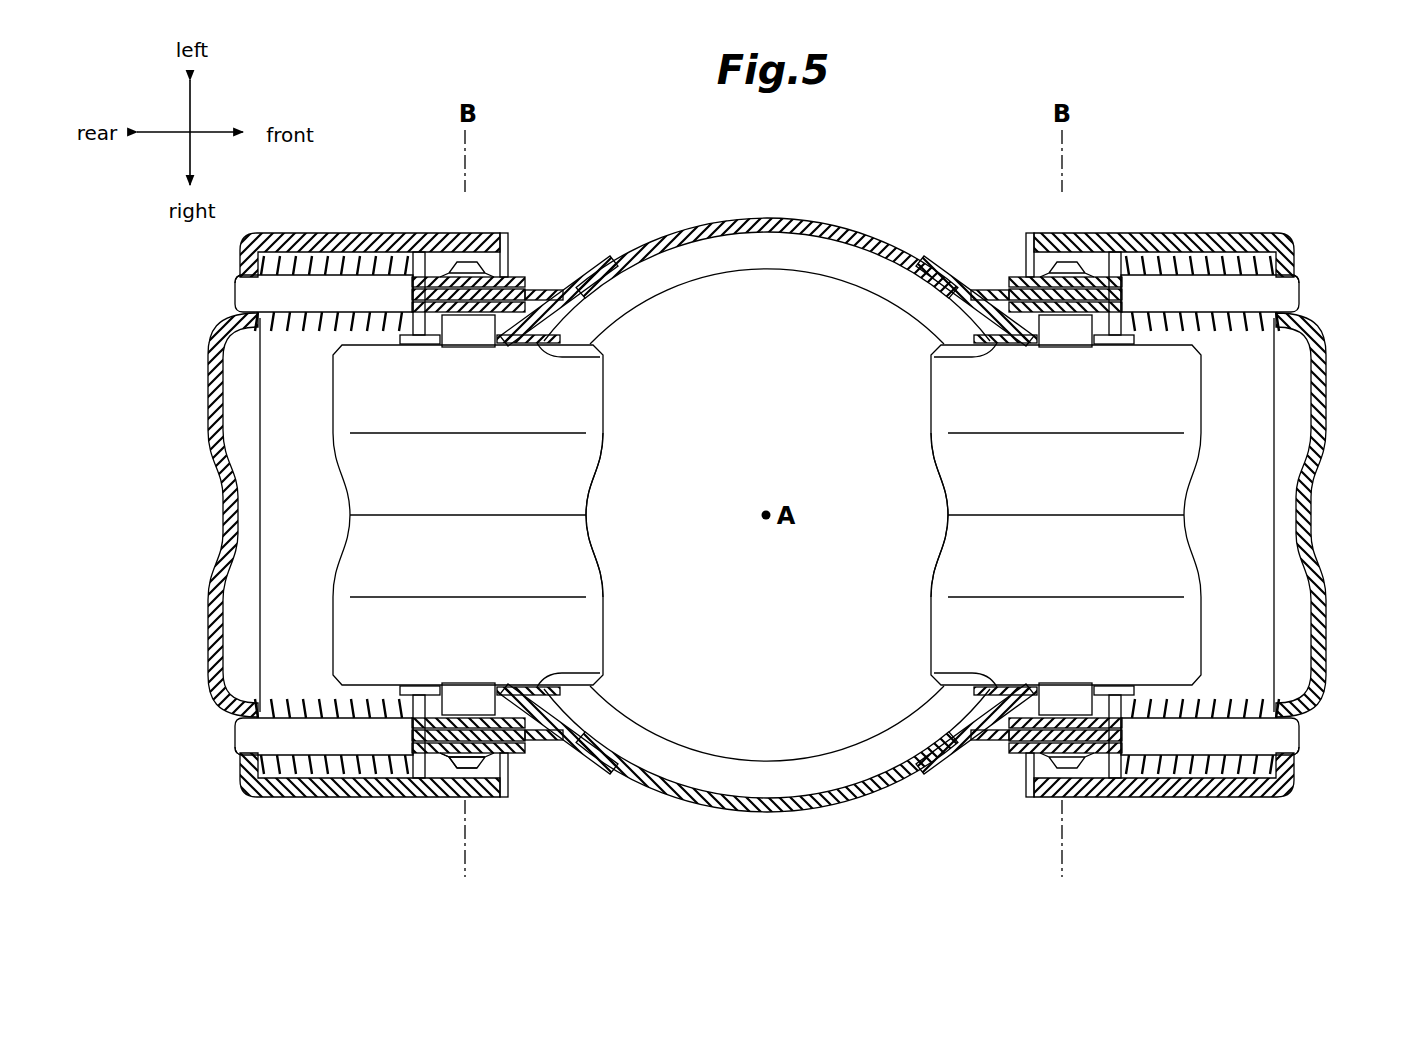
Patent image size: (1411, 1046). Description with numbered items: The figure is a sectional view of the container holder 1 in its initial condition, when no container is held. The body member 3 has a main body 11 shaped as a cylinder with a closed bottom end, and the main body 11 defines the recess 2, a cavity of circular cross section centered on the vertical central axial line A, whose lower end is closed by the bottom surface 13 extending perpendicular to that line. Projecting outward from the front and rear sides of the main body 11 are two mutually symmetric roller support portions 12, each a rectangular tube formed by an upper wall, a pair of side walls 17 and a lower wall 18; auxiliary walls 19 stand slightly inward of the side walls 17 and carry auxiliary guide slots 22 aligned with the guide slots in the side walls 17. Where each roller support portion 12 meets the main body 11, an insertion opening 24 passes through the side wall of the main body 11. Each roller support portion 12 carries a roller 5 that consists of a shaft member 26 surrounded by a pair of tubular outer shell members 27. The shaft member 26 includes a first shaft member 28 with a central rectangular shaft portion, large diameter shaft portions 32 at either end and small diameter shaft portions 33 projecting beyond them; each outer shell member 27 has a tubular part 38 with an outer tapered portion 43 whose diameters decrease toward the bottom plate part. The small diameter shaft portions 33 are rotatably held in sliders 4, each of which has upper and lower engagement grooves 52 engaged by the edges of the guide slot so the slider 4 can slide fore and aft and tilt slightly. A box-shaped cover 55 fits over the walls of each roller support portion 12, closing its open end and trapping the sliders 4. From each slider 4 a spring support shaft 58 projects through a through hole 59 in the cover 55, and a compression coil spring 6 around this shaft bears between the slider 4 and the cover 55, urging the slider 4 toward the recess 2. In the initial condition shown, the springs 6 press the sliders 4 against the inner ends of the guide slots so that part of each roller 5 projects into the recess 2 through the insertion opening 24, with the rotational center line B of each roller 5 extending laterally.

The container holder 1 is at (638, 167).
The recess 2 is at (733, 248).
The body member 3 is at (776, 814).
The slider 4 is at (527, 278).
The roller 5 is at (767, 515).
The spring 6 is at (322, 257).
The main body 11 is at (657, 784).
The roller support portion 12 is at (257, 407).
The bottom surface 13 is at (817, 722).
The side wall 17 is at (548, 290).
The lower wall 18 is at (272, 628).
The auxiliary wall 19 is at (518, 684).
The auxiliary guide slot 22 is at (415, 684).
The insertion opening 24 is at (598, 356).
The shaft member 26 is at (478, 775).
The outer shell member 27 is at (601, 562).
The first shaft member 28 is at (444, 772).
The large diameter shaft portion 32 is at (470, 692).
The small diameter shaft portion 33 is at (461, 770).
The tubular part 38 is at (597, 413).
The outer tapered portion 43 is at (580, 497).
The engagement groove 52 is at (488, 273).
The cover 55 is at (1318, 662).
The spring support shaft 58 is at (243, 299).
The through hole 59 is at (240, 277).